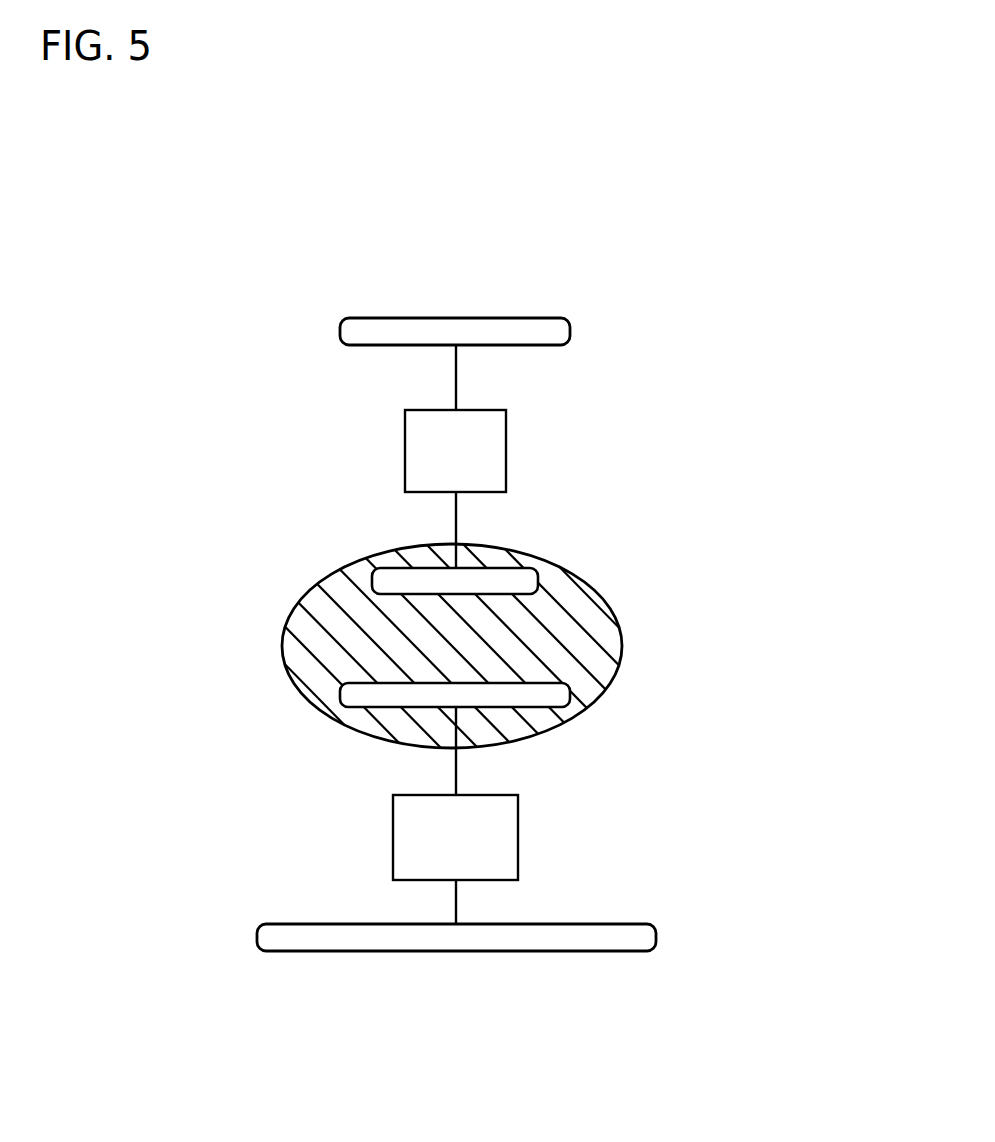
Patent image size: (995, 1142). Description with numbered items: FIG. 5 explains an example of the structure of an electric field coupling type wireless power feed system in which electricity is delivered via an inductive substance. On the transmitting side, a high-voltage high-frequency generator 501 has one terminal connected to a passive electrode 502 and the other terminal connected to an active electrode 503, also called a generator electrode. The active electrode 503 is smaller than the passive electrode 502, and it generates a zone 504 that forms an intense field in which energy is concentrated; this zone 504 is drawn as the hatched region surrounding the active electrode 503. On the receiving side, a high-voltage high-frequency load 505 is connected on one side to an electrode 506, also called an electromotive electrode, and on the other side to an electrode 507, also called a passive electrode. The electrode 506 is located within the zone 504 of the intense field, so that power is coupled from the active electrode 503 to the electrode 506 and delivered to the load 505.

The high-voltage high-frequency generator 501 is at (500, 853).
The passive electrode 502 is at (627, 940).
The active electrode 503 is at (545, 696).
The zone 504 is at (312, 660).
The high-voltage high-frequency load 505 is at (490, 467).
The electrode 506 is at (518, 583).
The electrode 507 is at (543, 333).